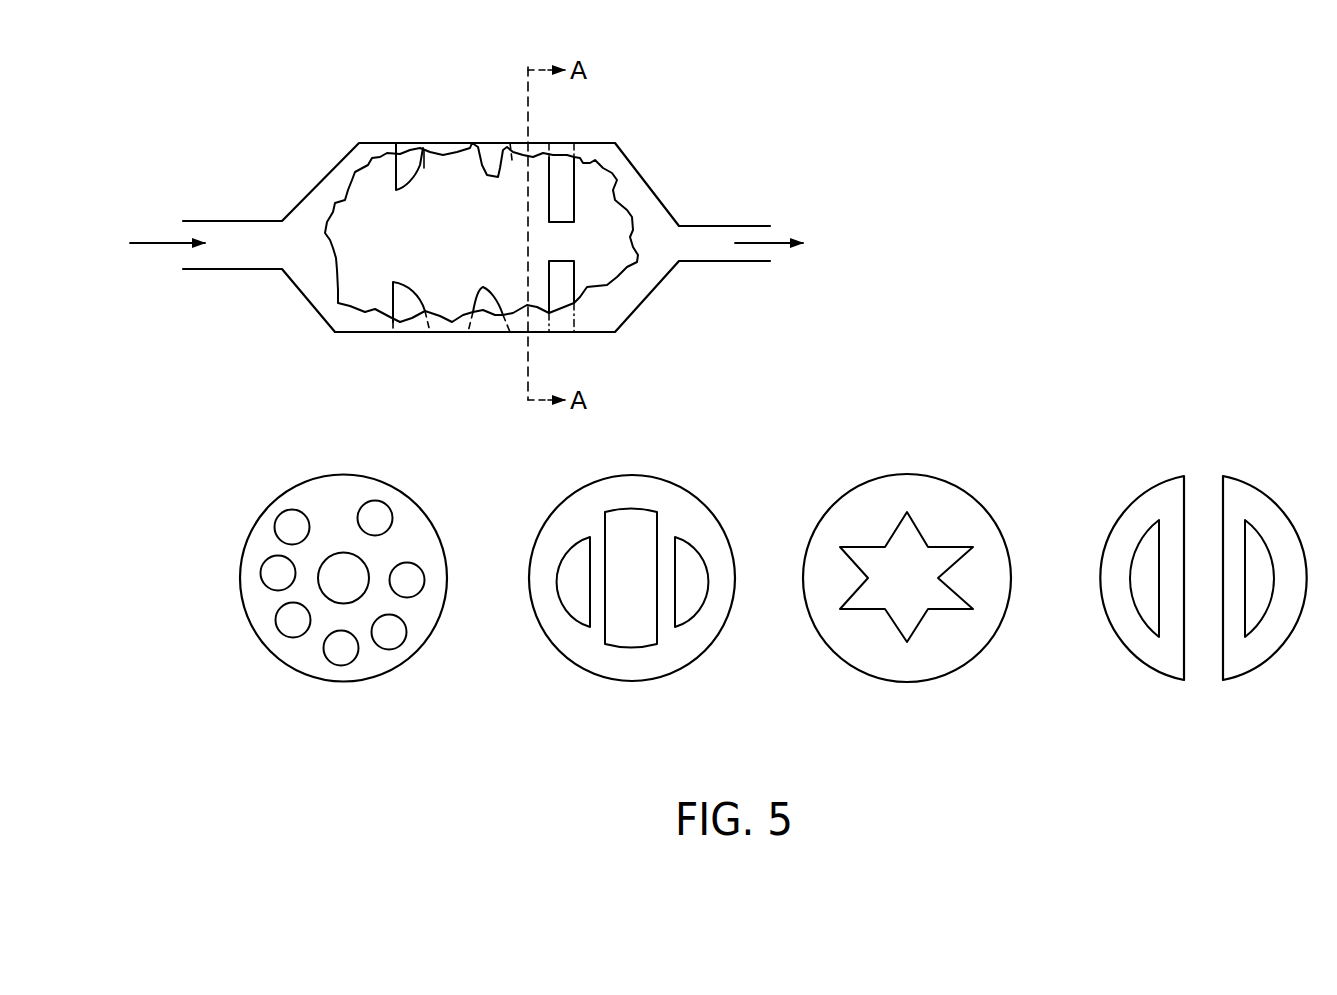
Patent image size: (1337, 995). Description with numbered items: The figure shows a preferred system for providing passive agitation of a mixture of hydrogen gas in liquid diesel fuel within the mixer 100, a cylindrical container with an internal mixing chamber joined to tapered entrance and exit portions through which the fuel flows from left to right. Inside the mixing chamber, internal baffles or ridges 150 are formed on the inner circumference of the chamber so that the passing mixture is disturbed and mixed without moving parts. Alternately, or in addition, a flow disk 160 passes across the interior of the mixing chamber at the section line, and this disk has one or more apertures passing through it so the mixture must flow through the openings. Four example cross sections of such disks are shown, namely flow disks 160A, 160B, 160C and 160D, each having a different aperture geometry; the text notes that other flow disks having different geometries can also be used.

The mixer 100 is at (627, 157).
The internal baffles or ridges 150 is at (413, 180).
The flow disk 160 is at (565, 282).
The flow disk 160A is at (327, 510).
The flow disk 160B is at (667, 510).
The flow disk 160C is at (943, 510).
The flow disk 160D is at (1240, 497).